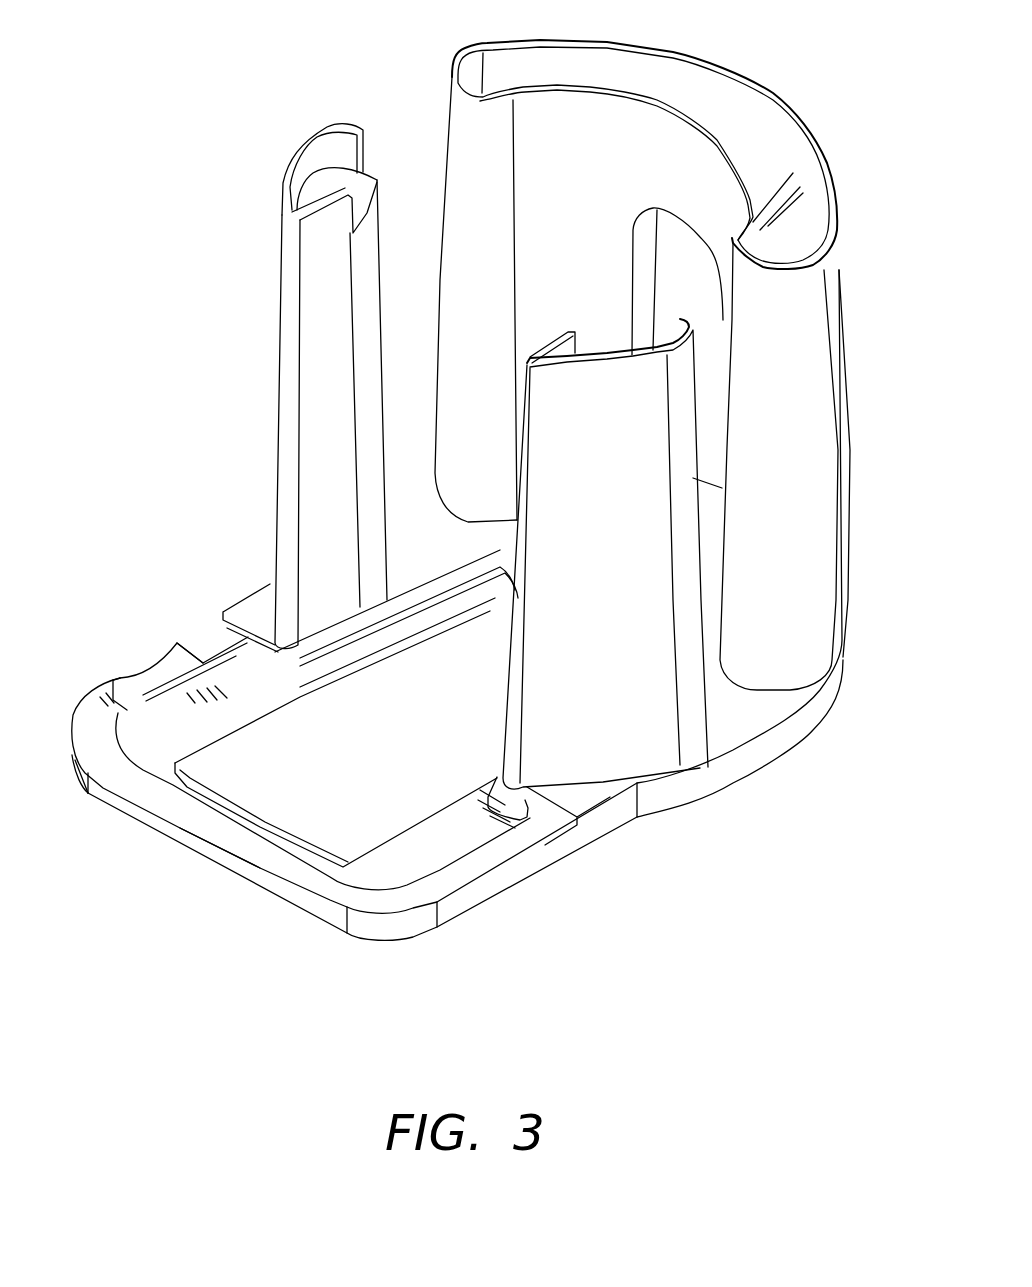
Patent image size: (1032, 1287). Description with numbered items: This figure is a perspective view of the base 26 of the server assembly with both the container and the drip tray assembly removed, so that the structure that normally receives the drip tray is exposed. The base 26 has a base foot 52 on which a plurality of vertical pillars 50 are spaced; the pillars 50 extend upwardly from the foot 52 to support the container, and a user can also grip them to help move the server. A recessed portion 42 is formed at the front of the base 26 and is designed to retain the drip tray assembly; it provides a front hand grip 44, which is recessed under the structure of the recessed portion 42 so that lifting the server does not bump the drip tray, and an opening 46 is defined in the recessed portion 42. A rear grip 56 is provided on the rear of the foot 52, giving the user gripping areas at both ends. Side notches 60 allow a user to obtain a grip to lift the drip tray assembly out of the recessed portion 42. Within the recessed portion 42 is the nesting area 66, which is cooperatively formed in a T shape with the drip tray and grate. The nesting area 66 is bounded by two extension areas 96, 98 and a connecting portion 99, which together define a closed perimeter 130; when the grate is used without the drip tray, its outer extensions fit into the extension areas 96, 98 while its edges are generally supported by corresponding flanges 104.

The base 26 is at (760, 870).
The recessed portion 42 is at (110, 847).
The front hand grip 44 is at (240, 873).
The opening 46 is at (353, 830).
The pillars 50 is at (288, 320).
The base foot 52 is at (807, 712).
The rear grip 56 is at (697, 480).
The side notches 60 is at (497, 870).
The nesting area 66 is at (248, 687).
The extension area 96 is at (157, 737).
The extension area 98 is at (417, 860).
The connecting portion 99 is at (257, 905).
The flanges 104 is at (410, 615).
The closed perimeter 130 is at (390, 927).